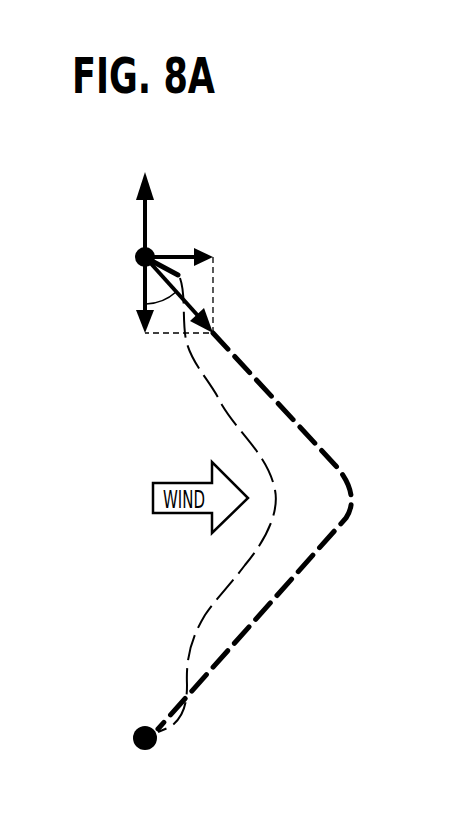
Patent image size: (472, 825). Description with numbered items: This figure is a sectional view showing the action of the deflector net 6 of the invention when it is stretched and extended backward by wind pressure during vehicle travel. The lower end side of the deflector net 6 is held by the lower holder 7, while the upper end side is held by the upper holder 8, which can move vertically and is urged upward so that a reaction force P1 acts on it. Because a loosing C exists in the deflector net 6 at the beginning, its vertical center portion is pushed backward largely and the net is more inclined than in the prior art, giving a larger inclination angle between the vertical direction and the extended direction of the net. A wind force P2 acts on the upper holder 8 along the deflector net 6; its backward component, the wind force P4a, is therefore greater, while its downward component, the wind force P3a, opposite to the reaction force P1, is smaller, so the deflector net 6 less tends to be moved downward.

The upper holder 8 is at (135, 256).
The lower holder 7 is at (133, 738).
The deflector net 6 is at (318, 437).
The loosing C is at (228, 583).
The reaction force P1 is at (167, 214).
The wind force P2 is at (191, 308).
The wind force (downward component) P3a is at (143, 290).
The wind force (backward component) P4a is at (183, 258).